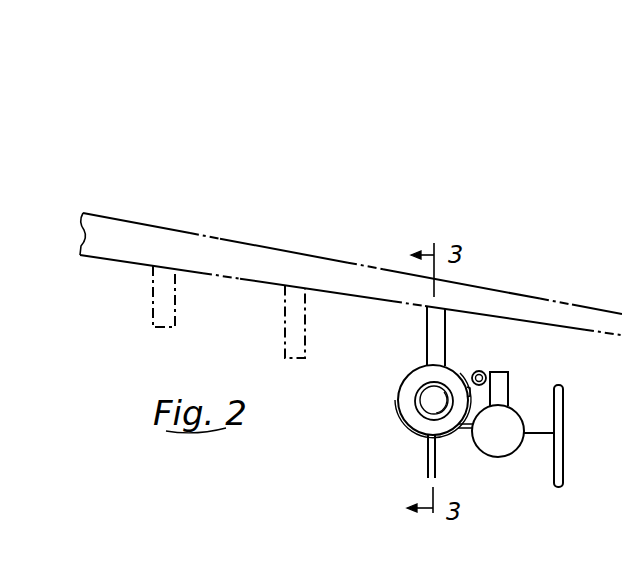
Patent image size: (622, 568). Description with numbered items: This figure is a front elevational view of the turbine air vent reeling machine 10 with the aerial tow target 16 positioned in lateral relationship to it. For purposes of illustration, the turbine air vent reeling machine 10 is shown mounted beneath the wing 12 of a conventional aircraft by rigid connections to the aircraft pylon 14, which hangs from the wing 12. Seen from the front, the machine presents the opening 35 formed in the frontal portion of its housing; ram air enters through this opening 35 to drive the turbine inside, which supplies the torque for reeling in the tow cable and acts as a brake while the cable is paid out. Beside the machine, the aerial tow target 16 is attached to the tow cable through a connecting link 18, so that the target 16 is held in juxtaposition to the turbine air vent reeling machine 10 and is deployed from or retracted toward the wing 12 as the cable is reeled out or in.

The turbine air vent reeling machine 10 is at (440, 422).
The wing 12 is at (402, 238).
The aircraft pylon 14 is at (428, 331).
The aerial tow target 16 is at (508, 445).
The connecting link 18 is at (485, 372).
The opening 35 is at (400, 392).